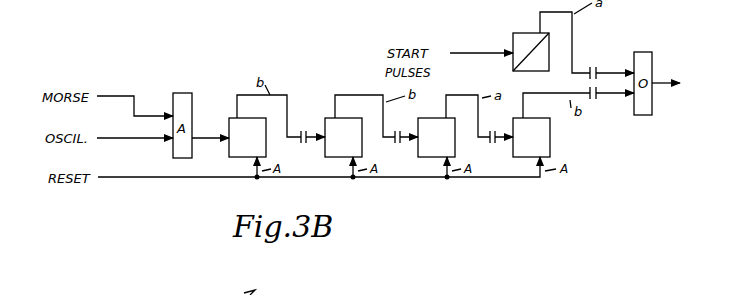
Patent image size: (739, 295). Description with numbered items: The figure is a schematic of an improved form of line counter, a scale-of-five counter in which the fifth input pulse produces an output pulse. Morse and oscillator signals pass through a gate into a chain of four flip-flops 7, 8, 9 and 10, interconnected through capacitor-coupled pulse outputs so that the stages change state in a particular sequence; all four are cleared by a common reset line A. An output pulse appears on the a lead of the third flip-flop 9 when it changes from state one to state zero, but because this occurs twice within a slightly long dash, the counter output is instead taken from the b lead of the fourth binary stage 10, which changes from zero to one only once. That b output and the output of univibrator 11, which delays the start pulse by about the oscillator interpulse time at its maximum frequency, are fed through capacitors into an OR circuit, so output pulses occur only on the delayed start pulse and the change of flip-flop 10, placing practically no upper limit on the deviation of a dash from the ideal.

The flip-flop 7 is at (229, 151).
The flip-flop 8 is at (325, 151).
The third flip-flop 9 is at (418, 151).
The fourth binary flip-flop stage 10 is at (513, 151).
The univibrator 11 is at (513, 33).